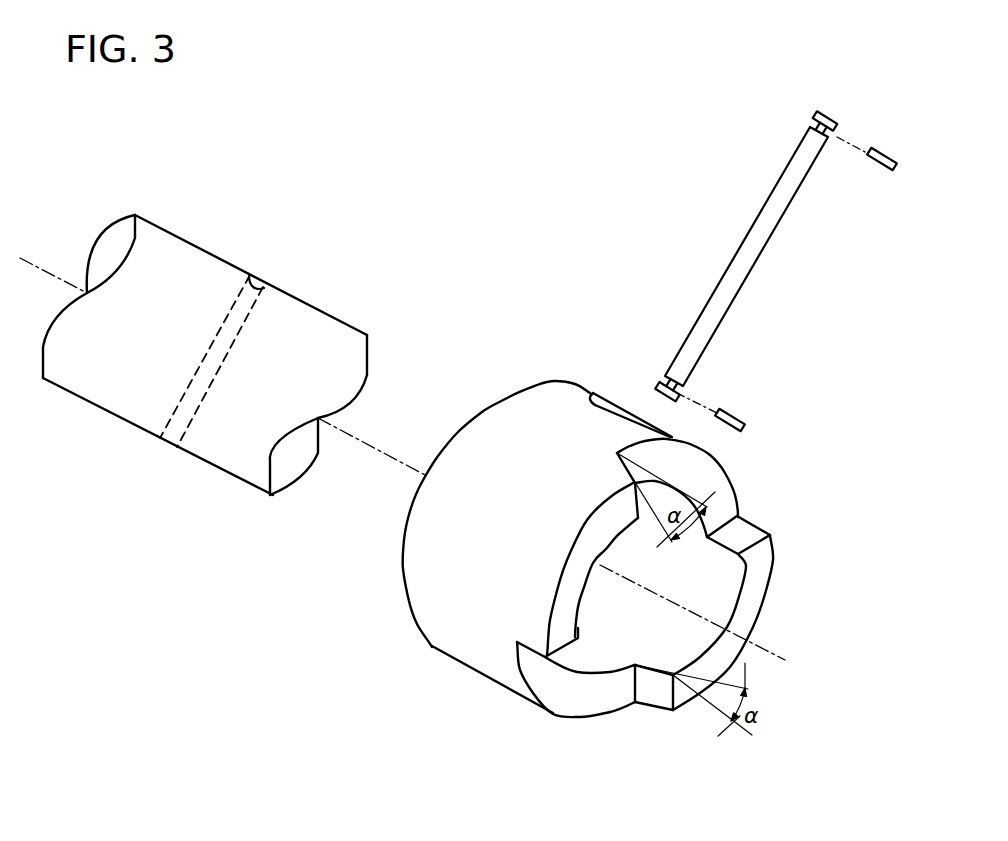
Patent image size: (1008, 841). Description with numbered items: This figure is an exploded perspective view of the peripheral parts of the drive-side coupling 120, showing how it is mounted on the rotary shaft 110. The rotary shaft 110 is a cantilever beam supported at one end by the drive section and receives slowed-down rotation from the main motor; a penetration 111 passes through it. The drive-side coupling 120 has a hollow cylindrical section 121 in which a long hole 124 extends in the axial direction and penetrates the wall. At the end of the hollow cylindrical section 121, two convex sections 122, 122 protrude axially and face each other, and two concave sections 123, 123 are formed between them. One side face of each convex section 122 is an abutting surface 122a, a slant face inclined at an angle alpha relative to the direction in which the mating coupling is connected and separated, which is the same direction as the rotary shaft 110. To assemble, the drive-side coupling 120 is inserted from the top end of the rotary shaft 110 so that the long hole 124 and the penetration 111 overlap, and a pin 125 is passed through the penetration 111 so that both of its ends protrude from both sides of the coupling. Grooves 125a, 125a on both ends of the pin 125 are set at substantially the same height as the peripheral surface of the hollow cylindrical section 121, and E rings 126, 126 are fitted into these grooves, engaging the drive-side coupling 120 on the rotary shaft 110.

The rotary shaft 110 is at (178, 237).
The penetration 111 is at (253, 277).
The drive-side coupling 120 is at (548, 345).
The hollow cylindrical section 121 is at (433, 595).
The convex section 122 is at (557, 608).
The abutting surface 122a is at (647, 700).
The concave section 123 is at (715, 475).
The long hole 124 is at (602, 392).
The pin 125 is at (762, 262).
The groove 125a is at (813, 121).
The E ring 126 is at (880, 150).